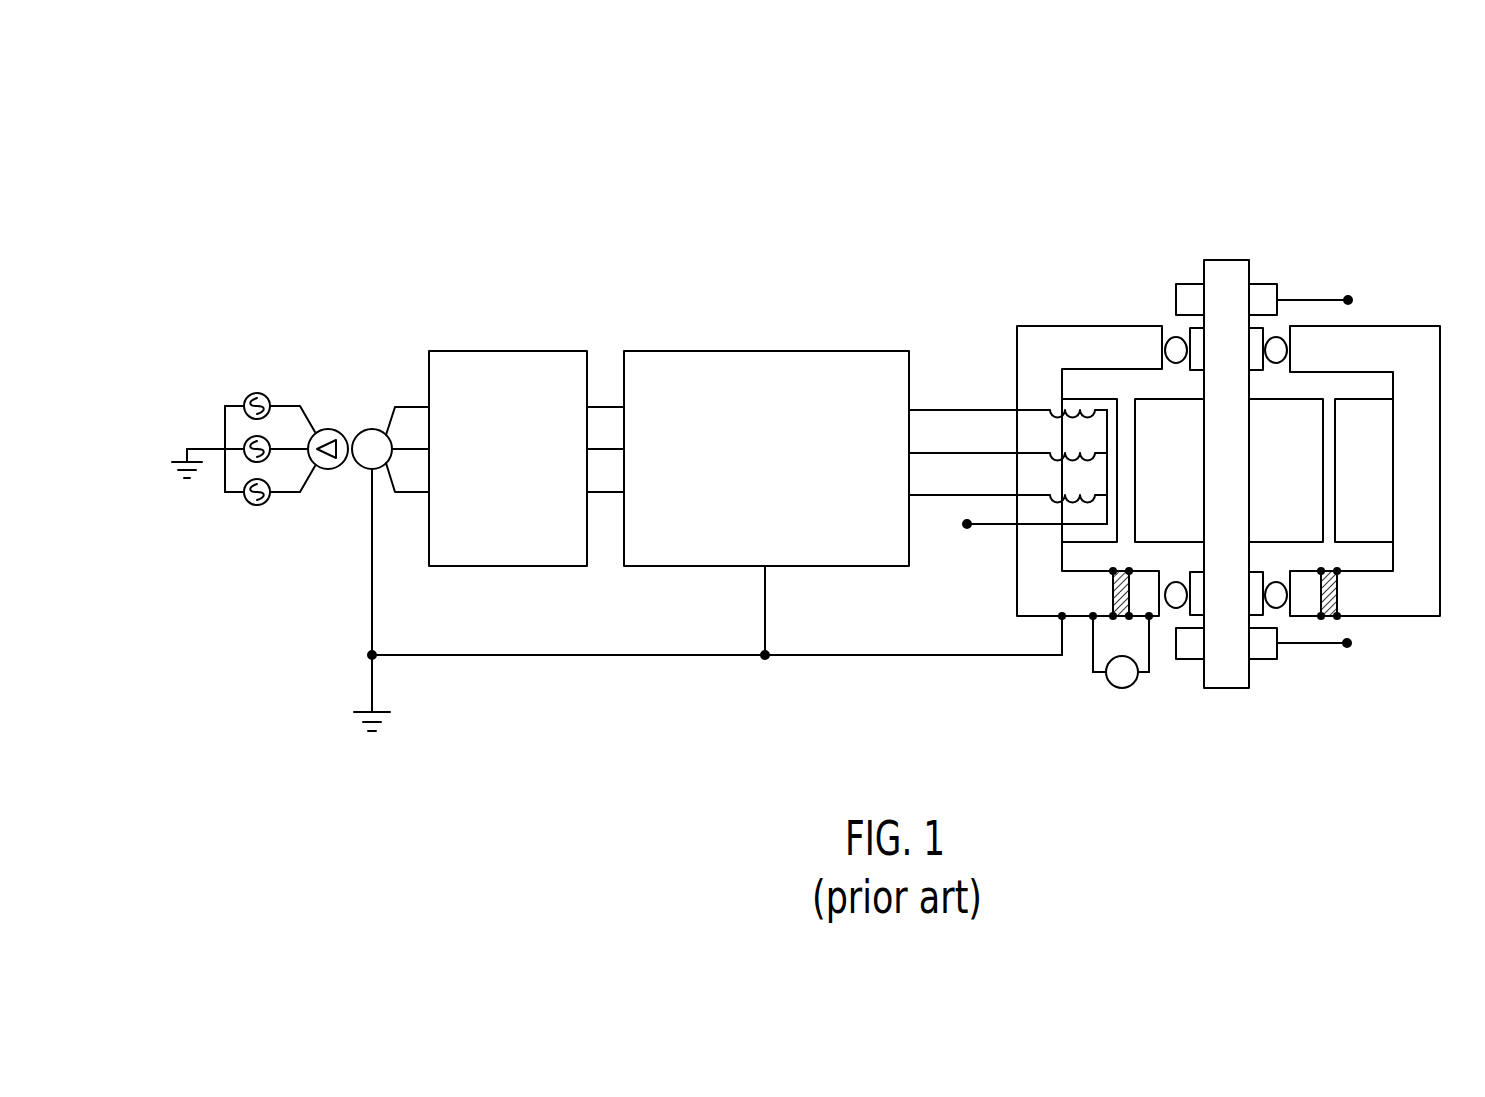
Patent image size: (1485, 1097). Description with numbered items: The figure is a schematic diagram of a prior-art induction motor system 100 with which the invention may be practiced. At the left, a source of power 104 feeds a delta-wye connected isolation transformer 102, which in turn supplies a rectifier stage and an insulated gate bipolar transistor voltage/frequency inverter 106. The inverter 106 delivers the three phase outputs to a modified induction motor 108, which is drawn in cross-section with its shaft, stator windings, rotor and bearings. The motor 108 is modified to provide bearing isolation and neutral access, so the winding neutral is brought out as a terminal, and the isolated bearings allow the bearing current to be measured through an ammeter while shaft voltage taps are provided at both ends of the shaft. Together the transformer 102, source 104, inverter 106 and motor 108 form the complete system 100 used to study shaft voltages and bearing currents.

The induction motor system 100 is at (814, 370).
The delta-wye connected isolation transformer 102 is at (368, 510).
The source of power 104 is at (243, 416).
The insulated gate bipolar transistor voltage/frequency inverter 106 is at (766, 428).
The modified induction motor 108 is at (1237, 438).